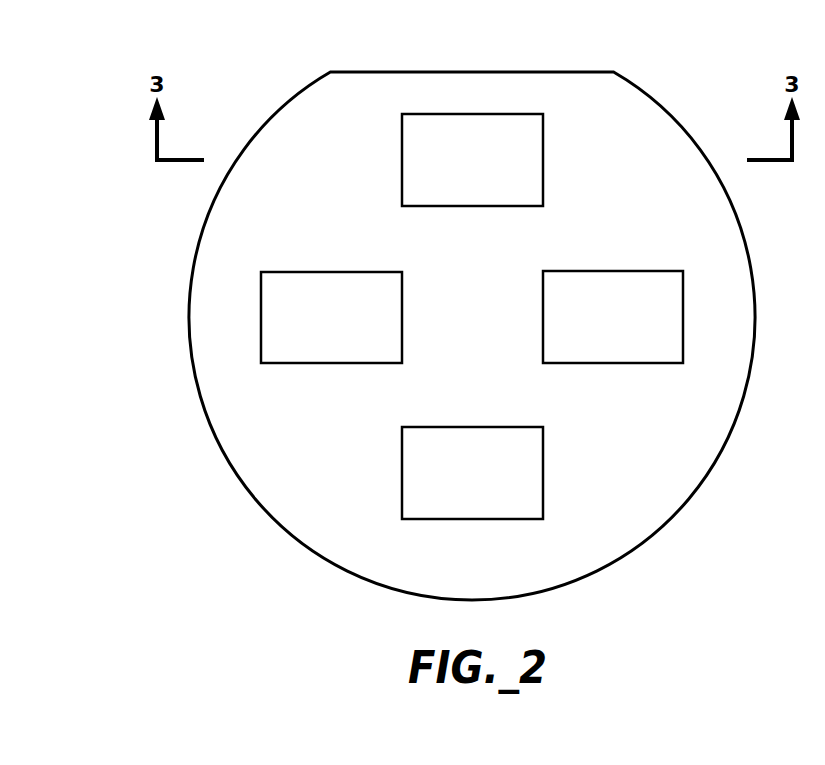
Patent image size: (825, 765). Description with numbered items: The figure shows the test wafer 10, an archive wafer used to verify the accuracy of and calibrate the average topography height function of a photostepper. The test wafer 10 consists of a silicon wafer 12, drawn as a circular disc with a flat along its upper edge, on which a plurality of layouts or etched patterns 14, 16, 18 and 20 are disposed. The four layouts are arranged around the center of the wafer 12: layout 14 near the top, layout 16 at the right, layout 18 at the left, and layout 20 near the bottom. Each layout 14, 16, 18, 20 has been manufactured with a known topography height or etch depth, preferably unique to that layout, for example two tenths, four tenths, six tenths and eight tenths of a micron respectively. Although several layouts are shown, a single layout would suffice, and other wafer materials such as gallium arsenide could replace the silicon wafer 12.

The test wafer 10 is at (637, 64).
The silicon wafer 12 is at (657, 512).
The layout 14 is at (543, 175).
The layout 16 is at (592, 271).
The layout 18 is at (360, 272).
The layout 20 is at (402, 453).